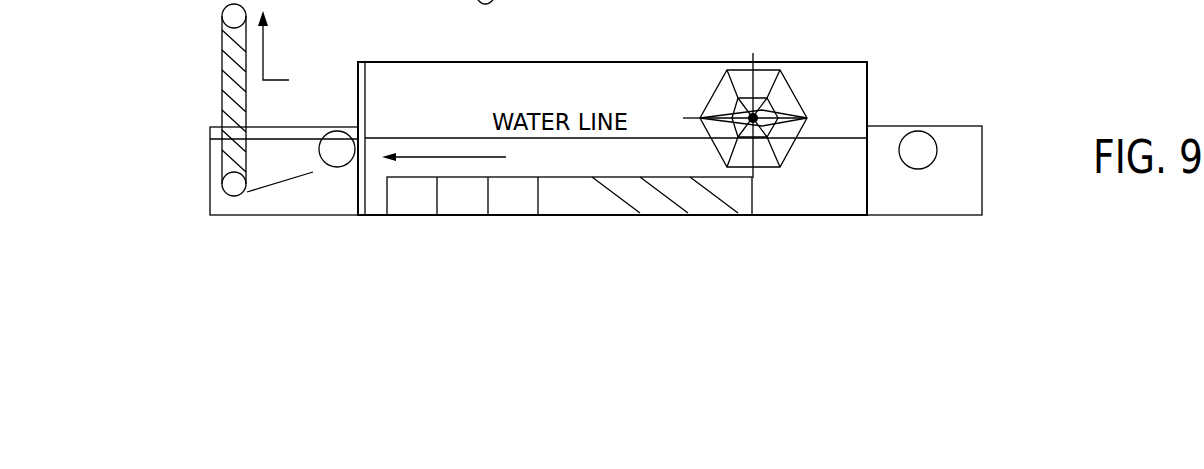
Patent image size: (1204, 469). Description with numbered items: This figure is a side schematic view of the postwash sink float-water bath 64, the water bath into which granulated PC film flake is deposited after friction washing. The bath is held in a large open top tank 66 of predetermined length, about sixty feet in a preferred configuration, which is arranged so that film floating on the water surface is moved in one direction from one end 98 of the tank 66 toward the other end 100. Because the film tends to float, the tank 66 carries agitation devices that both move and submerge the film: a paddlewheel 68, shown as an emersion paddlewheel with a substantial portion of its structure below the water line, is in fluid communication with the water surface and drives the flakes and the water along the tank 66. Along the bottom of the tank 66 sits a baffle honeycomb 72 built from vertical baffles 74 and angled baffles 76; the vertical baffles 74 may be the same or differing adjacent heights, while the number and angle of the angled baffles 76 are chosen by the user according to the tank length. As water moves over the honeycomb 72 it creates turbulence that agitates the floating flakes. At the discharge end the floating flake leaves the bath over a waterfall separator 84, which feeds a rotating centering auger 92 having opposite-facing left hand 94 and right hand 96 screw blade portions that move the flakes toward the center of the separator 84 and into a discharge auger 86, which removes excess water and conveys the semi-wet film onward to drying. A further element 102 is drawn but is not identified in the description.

The postwash sink float-water bath 64 is at (1016, 66).
The open top tank 66 is at (982, 170).
The paddlewheel 68 is at (766, 68).
The baffle honeycomb 72 is at (431, 226).
The vertical baffles 74 is at (490, 215).
The angled baffles 76 is at (665, 225).
The waterfall separator 84 is at (290, 187).
The discharge auger 86 is at (222, 105).
The centering auger 92 is at (337, 131).
The left hand screw blade portion 94 is at (558, 7).
The right hand screw blade portion 96 is at (940, 6).
The one end of the tank 98 is at (972, 111).
The other end of the tank 100 is at (199, 186).
The link 102 is at (644, 7).